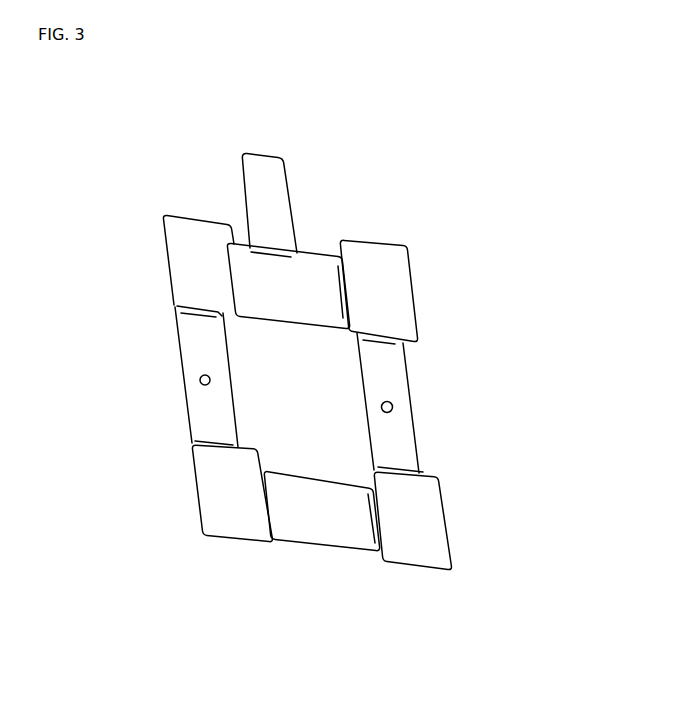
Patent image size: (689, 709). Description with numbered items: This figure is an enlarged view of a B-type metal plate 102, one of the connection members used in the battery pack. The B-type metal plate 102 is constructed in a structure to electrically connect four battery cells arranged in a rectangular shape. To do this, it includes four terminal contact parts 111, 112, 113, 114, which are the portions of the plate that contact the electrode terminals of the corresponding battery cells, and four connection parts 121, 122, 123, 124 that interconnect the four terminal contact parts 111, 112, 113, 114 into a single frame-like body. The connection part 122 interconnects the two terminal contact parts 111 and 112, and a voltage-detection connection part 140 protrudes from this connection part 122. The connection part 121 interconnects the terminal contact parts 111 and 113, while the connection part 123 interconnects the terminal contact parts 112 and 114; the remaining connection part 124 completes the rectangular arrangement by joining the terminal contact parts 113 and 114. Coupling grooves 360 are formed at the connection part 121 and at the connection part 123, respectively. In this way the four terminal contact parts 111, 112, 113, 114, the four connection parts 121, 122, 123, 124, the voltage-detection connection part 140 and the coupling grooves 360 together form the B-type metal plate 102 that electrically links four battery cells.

The B-type metal plate 102 is at (411, 209).
The terminal contact part 111 is at (170, 278).
The terminal contact part 112 is at (413, 297).
The terminal contact part 113 is at (195, 485).
The terminal contact part 114 is at (447, 522).
The connection part 121 is at (183, 375).
The connection part 122 is at (312, 254).
The connection part 123 is at (413, 438).
The connection part 124 is at (313, 545).
The voltage-detection connection part 140 is at (252, 150).
The coupling groove 360 is at (393, 405).